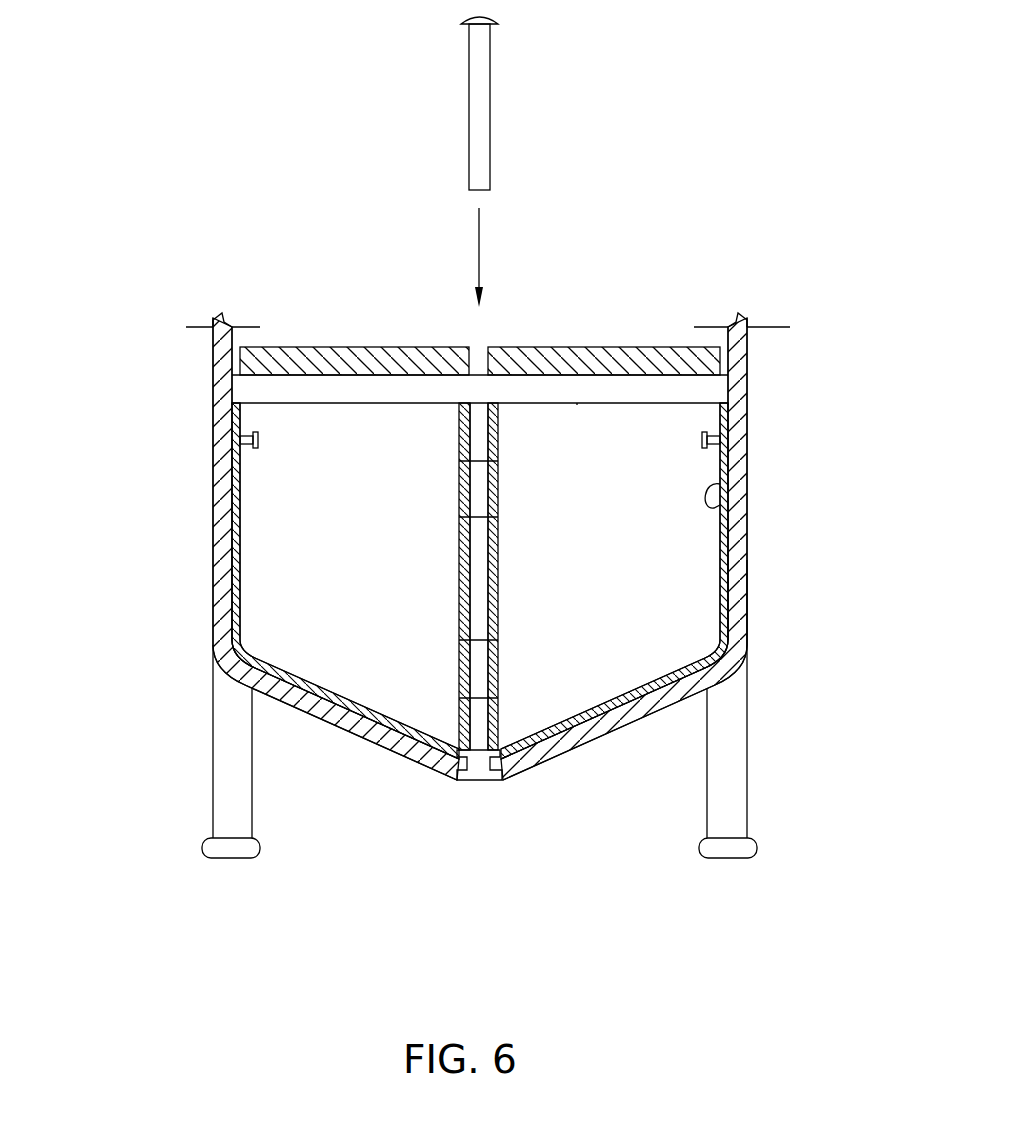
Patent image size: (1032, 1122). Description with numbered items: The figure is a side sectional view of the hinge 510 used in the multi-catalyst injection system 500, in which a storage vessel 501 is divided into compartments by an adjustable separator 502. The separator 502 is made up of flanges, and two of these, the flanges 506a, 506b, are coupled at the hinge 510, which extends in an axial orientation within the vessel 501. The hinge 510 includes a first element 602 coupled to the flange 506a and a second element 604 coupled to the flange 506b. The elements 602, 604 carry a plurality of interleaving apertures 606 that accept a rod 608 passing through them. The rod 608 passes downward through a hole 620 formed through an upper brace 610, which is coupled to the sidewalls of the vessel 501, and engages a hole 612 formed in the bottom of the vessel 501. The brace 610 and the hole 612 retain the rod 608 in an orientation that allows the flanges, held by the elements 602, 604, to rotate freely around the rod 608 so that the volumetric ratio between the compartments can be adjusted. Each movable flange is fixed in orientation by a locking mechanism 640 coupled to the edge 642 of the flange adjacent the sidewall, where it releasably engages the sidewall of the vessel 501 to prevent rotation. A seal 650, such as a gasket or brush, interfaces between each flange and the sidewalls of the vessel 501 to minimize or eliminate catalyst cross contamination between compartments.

The multi-catalyst injection system 500 is at (142, 372).
The storage vessel 501 is at (746, 473).
The adjustable separator 502 is at (577, 425).
The flange 506a is at (677, 562).
The flange 506b is at (278, 565).
The hinge 510 is at (448, 574).
The first element 602 is at (448, 427).
The second element 604 is at (459, 495).
The interleaving apertures 606 is at (508, 443).
The rod 608 is at (490, 78).
The upper brace 610 is at (315, 347).
The hole 612 is at (455, 780).
The hole 620 is at (450, 347).
The locking mechanism 640 is at (720, 430).
The edge 642 is at (722, 495).
The seal 650 is at (727, 603).